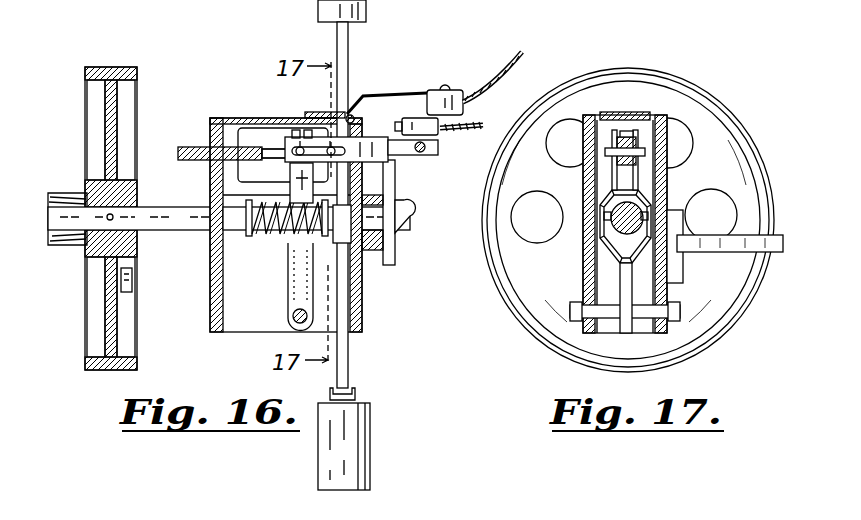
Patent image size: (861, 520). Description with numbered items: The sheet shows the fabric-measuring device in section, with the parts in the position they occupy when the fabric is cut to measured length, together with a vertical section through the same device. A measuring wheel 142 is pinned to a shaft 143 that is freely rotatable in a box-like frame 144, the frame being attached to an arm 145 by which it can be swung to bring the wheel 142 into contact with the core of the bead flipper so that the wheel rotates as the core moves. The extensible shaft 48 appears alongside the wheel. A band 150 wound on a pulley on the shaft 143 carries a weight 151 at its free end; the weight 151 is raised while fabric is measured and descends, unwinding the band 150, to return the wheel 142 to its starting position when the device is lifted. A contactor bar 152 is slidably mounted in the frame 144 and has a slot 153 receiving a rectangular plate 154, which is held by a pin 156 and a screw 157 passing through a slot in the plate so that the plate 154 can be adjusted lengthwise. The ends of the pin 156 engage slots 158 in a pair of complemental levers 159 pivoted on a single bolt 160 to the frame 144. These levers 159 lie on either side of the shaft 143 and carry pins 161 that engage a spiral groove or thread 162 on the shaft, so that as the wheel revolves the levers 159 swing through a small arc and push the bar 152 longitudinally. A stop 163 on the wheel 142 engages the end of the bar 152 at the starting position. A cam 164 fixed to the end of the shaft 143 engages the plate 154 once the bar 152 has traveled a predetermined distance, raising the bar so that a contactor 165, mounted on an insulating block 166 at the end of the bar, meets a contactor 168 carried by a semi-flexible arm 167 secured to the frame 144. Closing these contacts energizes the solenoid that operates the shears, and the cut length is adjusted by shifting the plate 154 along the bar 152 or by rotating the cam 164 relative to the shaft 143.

In FIG. 16, the extensible shaft 48 is at (62, 195).
In FIG. 16, the wheel 142 is at (137, 76).
In FIG. 17, the wheel 142 is at (704, 106).
In FIG. 16, the shaft 143 is at (158, 232).
In FIG. 17, the shaft 143 is at (604, 214).
In FIG. 17, the frame 144 is at (600, 284).
In FIG. 17, the arm 145 is at (758, 254).
In FIG. 16, the band 150 is at (348, 366).
In FIG. 16, the weight 151 is at (360, 445).
In FIG. 16, the contactor bar 152 is at (187, 151).
In FIG. 16, the slot 153 is at (264, 130).
In FIG. 17, the slot 153 is at (625, 222).
In FIG. 16, the rectangular plate 154 is at (400, 150).
In FIG. 17, the rectangular plate 154 is at (655, 152).
In FIG. 16, the pin 156 is at (292, 155).
In FIG. 17, the pin 156 is at (602, 158).
In FIG. 16, the screw 157 is at (348, 116).
In FIG. 17, the screw 157 is at (634, 140).
In FIG. 16, the slots 158 is at (306, 130).
In FIG. 16, the complemental levers 159 is at (290, 290).
In FIG. 17, the complemental levers 159 is at (632, 284).
In FIG. 16, the bolt 160 is at (293, 320).
In FIG. 17, the bolt 160 is at (585, 320).
In FIG. 17, the pins 161 is at (654, 206).
In FIG. 16, the spiral groove or thread 162 is at (272, 234).
In FIG. 16, the stop 163 is at (130, 286).
In FIG. 16, the cam 164 is at (395, 188).
In FIG. 16, the contactor 165 is at (412, 118).
In FIG. 16, the insulating block 166 is at (462, 126).
In FIG. 16, the semi-flexible arm 167 is at (382, 96).
In FIG. 17, the semi-flexible arm 167 is at (630, 112).
In FIG. 16, the contactor 168 is at (464, 100).